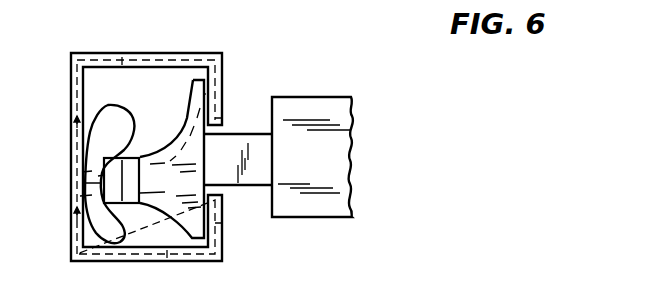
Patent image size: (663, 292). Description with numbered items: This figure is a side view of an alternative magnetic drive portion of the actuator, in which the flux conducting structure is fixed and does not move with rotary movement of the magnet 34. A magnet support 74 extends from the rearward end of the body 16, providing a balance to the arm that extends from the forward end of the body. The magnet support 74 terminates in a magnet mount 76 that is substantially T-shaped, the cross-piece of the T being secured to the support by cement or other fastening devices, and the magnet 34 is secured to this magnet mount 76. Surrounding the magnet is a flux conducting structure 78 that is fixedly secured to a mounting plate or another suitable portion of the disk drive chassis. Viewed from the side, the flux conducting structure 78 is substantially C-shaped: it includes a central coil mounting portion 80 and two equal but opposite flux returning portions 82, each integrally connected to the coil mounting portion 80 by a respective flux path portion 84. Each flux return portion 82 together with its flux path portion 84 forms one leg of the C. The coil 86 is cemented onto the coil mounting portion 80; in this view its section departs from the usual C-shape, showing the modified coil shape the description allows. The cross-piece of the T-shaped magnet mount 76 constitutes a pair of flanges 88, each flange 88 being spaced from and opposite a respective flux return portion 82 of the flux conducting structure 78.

The body 16 is at (332, 213).
The magnet 34 is at (123, 157).
The magnet support 74 is at (253, 184).
The magnet mount 76 is at (181, 130).
The flux conducting structure 78 is at (122, 53).
The coil mounting portion 80 is at (83, 181).
The flux returning portion 82 is at (223, 118).
The flux path portion 84 is at (172, 52).
The coil 86 is at (112, 89).
The flange 88 is at (205, 92).